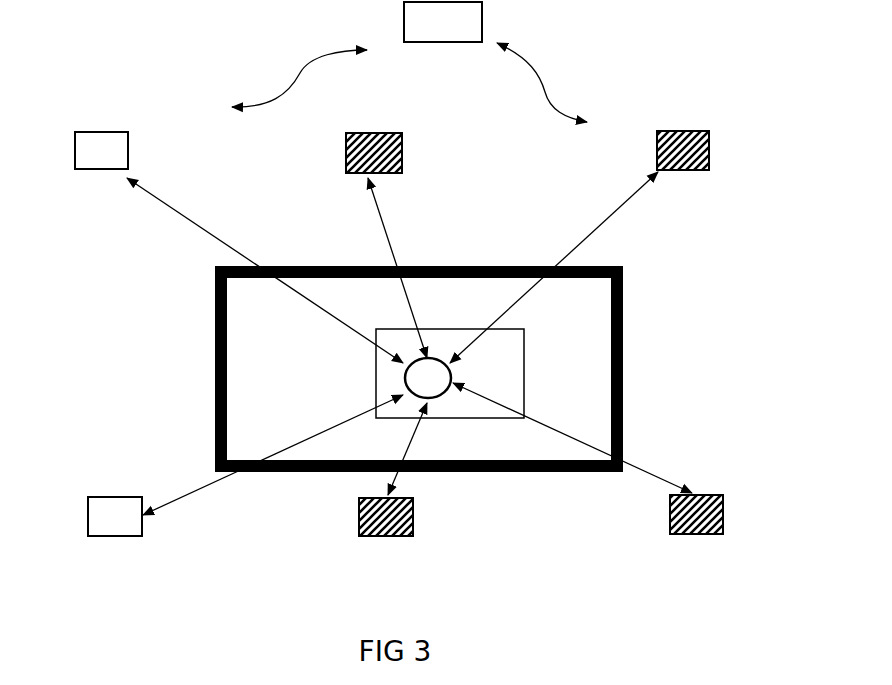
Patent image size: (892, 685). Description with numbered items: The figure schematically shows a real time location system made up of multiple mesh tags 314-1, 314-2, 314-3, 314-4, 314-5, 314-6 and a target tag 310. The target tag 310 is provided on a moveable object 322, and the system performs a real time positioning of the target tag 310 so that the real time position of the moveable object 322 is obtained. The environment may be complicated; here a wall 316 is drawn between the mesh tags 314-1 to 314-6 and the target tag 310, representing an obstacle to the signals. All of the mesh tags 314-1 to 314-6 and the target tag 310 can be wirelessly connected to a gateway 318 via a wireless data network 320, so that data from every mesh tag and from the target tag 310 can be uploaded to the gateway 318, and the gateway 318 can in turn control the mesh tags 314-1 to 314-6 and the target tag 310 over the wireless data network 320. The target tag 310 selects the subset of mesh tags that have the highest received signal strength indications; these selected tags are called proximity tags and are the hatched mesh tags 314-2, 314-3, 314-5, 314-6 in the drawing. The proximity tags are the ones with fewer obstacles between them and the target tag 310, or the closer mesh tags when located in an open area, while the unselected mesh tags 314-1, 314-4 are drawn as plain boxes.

The target tag 310 is at (452, 405).
The mesh tag 314-1 is at (83, 180).
The mesh tag (proximity tag) 314-2 is at (400, 177).
The mesh tag (proximity tag) 314-3 is at (708, 188).
The mesh tag 314-4 is at (90, 545).
The mesh tag (proximity tag) 314-5 is at (410, 540).
The mesh tag (proximity tag) 314-6 is at (720, 540).
The wall 316 is at (188, 355).
The gateway 318 is at (473, 45).
The wireless data network 320 is at (412, 82).
The moveable object 322 is at (526, 390).